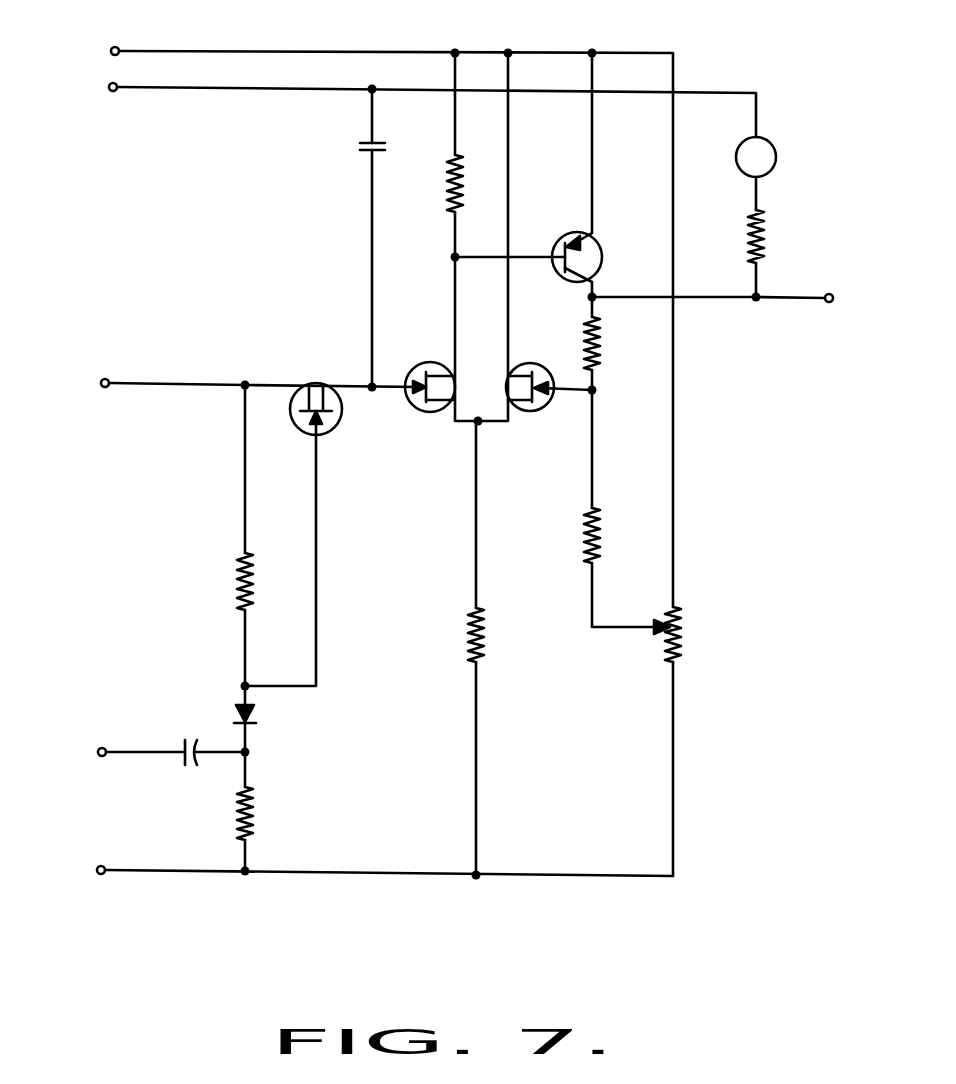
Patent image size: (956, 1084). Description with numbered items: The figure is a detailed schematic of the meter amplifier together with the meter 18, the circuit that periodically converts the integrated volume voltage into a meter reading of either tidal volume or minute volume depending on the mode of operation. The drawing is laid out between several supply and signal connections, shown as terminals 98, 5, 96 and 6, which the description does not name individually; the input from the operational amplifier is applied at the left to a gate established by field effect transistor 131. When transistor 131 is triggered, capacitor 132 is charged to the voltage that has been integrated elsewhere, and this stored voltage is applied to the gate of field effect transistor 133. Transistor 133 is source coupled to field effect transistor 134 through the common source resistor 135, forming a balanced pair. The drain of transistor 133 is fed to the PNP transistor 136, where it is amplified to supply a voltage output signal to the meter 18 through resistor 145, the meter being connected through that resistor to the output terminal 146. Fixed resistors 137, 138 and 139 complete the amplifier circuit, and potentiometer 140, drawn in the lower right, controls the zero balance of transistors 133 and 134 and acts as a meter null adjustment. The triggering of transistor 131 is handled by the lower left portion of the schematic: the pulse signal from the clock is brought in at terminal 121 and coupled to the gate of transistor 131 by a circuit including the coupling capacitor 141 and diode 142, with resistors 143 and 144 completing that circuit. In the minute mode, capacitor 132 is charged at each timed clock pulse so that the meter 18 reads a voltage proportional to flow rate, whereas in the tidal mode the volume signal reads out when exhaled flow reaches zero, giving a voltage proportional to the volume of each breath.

The supply terminal 98 is at (117, 50).
The terminal 5 is at (113, 91).
The input terminal 96 is at (108, 380).
The terminal 6 is at (101, 874).
The terminal 121 is at (114, 749).
The output terminal 146 is at (833, 300).
The meter 18 is at (788, 153).
The field effect transistor 131 is at (330, 384).
The capacitor 132 is at (358, 146).
The field effect transistor 133 is at (445, 410).
The field effect transistor 134 is at (540, 409).
The common source resistor 135 is at (495, 633).
The PNP transistor 136 is at (602, 256).
The fixed resistor 137 is at (437, 183).
The fixed resistor 138 is at (604, 342).
The fixed resistor 139 is at (606, 528).
The potentiometer 140 is at (688, 630).
The coupling capacitor 141 is at (190, 768).
The diode 142 is at (253, 714).
The resistor 143 is at (236, 584).
The resistor 144 is at (260, 812).
The resistor 145 is at (772, 236).